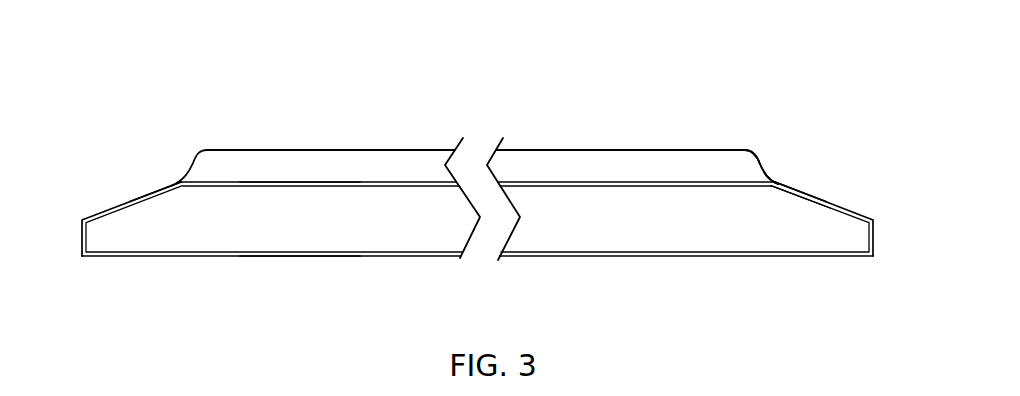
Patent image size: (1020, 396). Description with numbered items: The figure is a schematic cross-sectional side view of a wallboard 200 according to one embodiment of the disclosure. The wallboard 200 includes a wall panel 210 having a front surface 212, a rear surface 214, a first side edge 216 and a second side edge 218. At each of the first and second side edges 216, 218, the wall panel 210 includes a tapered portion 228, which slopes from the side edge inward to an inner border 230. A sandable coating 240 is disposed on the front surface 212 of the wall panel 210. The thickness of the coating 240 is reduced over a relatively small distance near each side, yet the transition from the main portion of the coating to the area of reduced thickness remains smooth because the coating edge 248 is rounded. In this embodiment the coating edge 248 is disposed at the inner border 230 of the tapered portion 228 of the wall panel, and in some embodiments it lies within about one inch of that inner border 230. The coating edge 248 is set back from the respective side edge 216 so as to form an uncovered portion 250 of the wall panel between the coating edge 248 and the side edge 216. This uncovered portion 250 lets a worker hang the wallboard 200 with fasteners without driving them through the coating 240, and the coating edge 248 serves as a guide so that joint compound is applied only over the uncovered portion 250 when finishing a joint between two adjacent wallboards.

The wallboard 200 is at (559, 110).
The wall panel 210 is at (562, 231).
The front surface 212 is at (300, 178).
The rear surface 214 is at (296, 261).
The first side edge 216 is at (896, 248).
The second side edge 218 is at (53, 245).
The tapered portion 228 is at (114, 207).
The inner border 230 is at (756, 194).
The sandable coating 240 is at (562, 180).
The coating edge 248 is at (751, 136).
The uncovered portion 250 is at (778, 122).